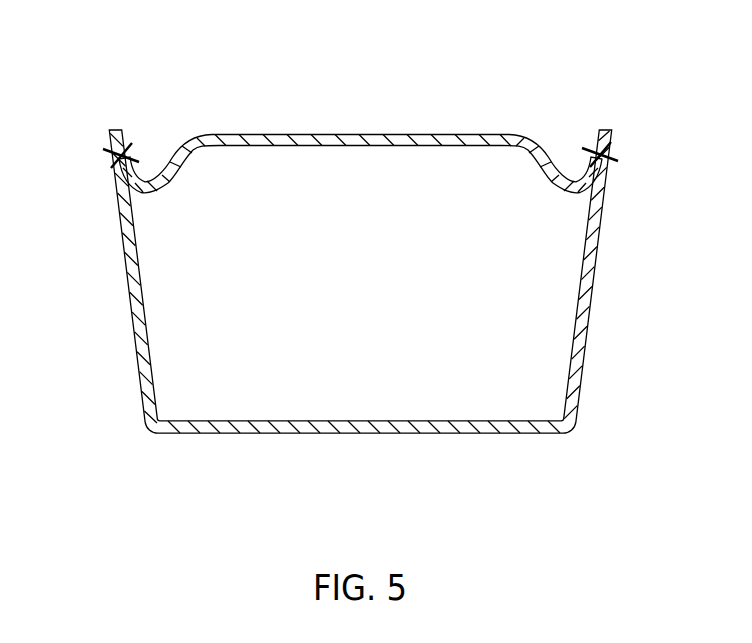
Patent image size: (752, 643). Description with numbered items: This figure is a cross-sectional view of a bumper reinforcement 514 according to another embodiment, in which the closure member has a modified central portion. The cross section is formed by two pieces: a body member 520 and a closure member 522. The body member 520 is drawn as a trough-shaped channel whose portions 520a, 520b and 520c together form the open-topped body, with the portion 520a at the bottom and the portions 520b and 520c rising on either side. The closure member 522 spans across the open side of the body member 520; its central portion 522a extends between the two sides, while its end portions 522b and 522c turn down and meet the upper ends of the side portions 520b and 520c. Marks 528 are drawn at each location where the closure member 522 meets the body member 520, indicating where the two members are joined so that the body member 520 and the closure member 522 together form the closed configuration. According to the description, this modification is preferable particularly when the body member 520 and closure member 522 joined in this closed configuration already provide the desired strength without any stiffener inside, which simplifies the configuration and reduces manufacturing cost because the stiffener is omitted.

The bumper reinforcement 514 is at (361, 257).
The body member 520 is at (360, 317).
The bottom wall 520a is at (325, 434).
The left side wall 520b is at (120, 222).
The right side wall 520c is at (600, 221).
The closure member 522 is at (366, 125).
The lid top plate portion 522a is at (384, 133).
The lid left edge portion 522b is at (120, 129).
The lid right edge portion 522c is at (601, 129).
The weld portion 528 is at (108, 154).